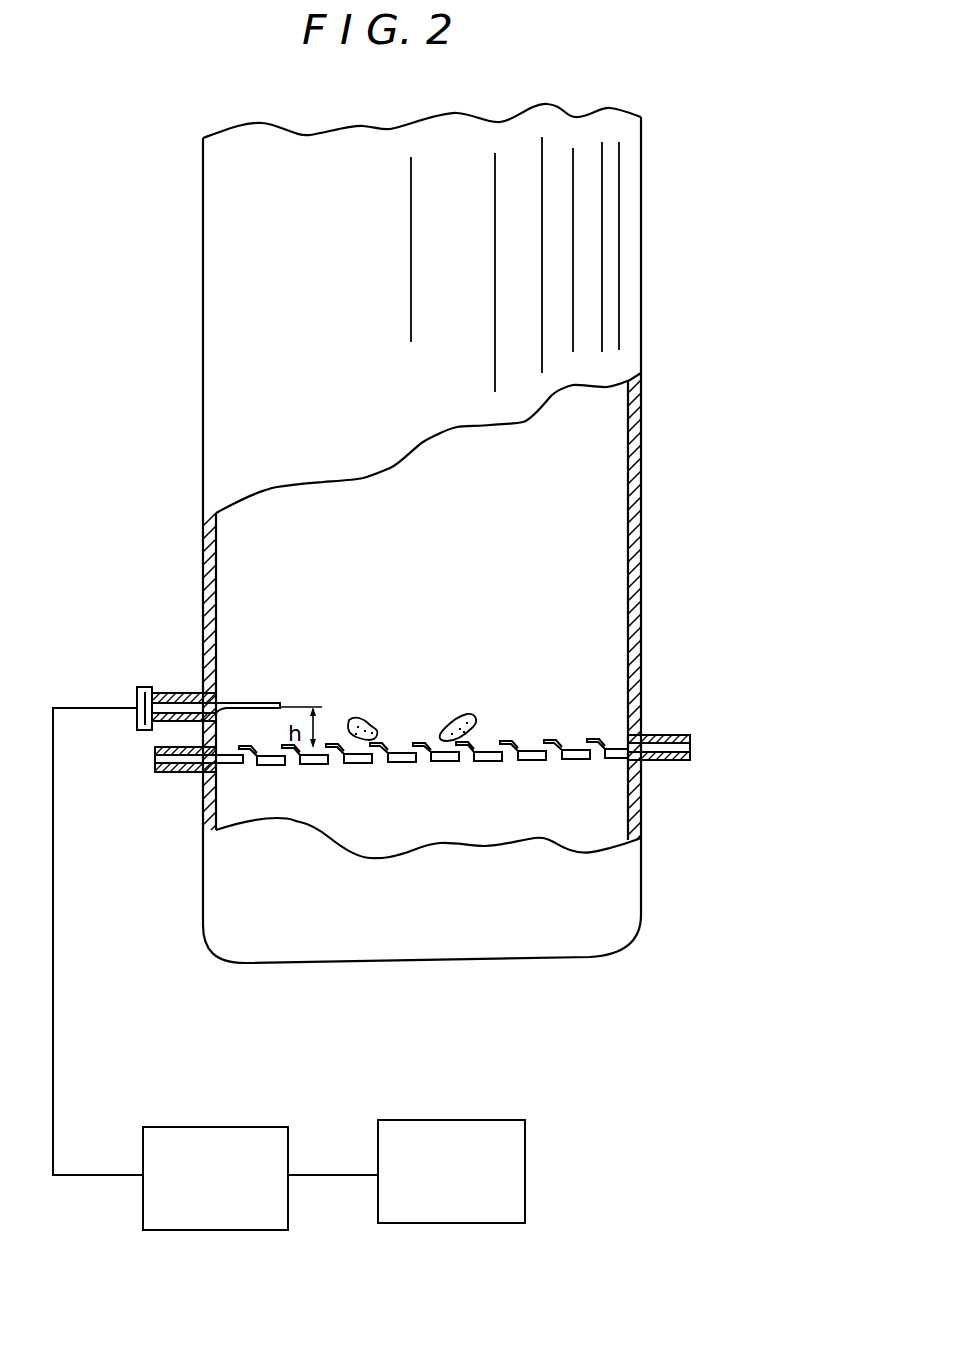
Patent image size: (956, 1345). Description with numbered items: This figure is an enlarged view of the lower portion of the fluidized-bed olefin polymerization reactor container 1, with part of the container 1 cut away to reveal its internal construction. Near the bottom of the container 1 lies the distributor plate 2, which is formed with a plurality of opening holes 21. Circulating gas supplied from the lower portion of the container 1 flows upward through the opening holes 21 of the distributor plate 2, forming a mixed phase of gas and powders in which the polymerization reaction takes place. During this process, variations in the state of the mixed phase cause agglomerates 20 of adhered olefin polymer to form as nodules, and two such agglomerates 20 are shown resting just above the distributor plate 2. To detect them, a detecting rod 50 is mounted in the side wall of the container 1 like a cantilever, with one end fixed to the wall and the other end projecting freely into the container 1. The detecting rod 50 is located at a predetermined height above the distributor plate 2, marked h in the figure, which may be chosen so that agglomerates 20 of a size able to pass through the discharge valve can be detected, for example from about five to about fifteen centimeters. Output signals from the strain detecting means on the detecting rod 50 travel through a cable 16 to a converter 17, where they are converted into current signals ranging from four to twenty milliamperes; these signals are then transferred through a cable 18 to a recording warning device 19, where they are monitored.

The fluidized-bed olefin polymerization reactor container 1 is at (220, 293).
The distributor plate 2 is at (540, 758).
The cable 16 is at (53, 975).
The converter 17 is at (205, 1127).
The cable 18 is at (323, 1174).
The recording warning device 19 is at (462, 1119).
The agglomerates 20 is at (365, 720).
The opening holes 21 is at (463, 758).
The detecting rod 50 is at (252, 699).